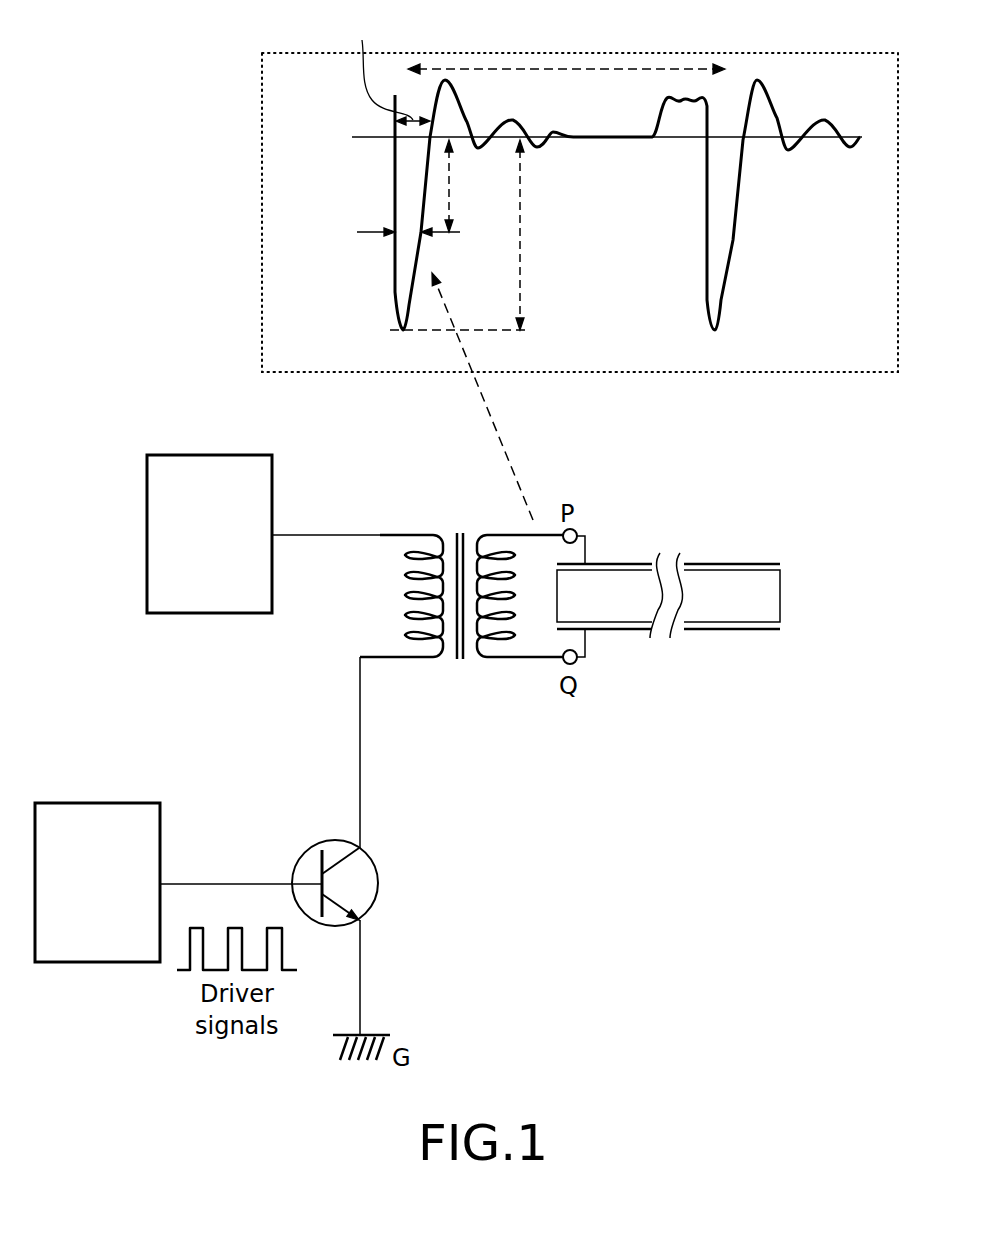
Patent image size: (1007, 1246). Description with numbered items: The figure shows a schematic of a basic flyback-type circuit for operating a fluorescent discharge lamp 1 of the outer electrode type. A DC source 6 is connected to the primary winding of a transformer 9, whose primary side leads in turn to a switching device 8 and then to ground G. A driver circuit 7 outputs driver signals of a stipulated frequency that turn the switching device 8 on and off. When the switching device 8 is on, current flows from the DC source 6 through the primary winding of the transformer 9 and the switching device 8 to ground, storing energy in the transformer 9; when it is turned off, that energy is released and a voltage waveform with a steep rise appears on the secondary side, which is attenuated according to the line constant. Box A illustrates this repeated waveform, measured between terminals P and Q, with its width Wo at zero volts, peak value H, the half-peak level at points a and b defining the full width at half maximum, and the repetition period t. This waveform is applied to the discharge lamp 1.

The discharge lamp 1 is at (727, 557).
The DC source 6 is at (168, 454).
The driver circuit 7 is at (56, 802).
The switching device 8 is at (377, 853).
The transformer 9 is at (437, 534).
The voltage waveform box A is at (262, 84).